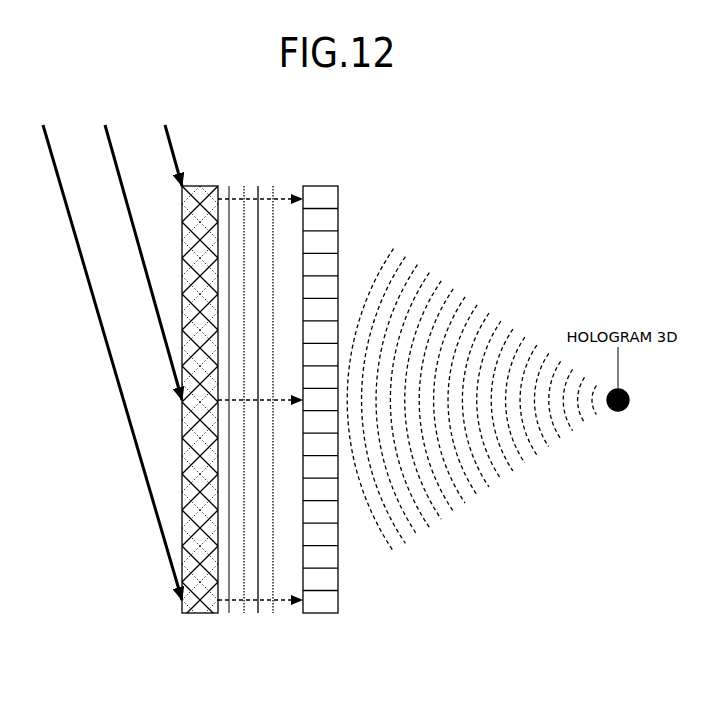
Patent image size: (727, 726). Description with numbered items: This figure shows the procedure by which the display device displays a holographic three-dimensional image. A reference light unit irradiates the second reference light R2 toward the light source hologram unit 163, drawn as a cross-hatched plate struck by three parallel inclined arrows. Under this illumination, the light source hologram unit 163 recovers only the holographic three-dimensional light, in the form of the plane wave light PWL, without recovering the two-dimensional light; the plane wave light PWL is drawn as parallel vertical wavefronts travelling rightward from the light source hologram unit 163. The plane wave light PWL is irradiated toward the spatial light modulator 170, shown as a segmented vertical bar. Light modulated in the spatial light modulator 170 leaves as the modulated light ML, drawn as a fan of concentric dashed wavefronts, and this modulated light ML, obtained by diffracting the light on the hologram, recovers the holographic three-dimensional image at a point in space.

The light source hologram unit 163 is at (192, 186).
The spatial light modulator 170 is at (320, 186).
The second reference light R2 is at (165, 121).
The plane wave light PWL is at (247, 602).
The modulated light ML is at (496, 312).